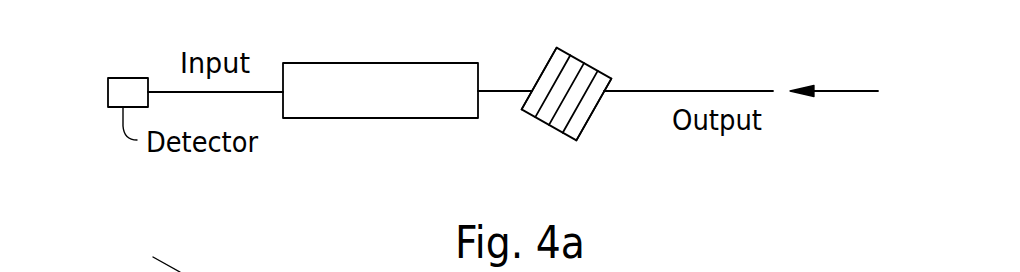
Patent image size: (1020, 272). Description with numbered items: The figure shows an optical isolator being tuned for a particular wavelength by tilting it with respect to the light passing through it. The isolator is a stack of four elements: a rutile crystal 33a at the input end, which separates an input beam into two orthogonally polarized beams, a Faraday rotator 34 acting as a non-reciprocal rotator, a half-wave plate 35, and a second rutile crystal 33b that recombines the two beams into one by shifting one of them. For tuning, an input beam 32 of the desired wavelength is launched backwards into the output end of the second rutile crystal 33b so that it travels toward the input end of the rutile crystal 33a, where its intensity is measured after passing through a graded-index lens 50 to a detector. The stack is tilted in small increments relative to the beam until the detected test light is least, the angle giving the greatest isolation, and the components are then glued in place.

The input beam 32 is at (867, 92).
The rutile crystal 33a is at (557, 50).
The second rutile crystal 33b is at (581, 128).
The Faraday rotator 34 is at (545, 118).
The half-wave plate 35 is at (587, 66).
The graded-index (GRIN) lens 50 is at (332, 63).